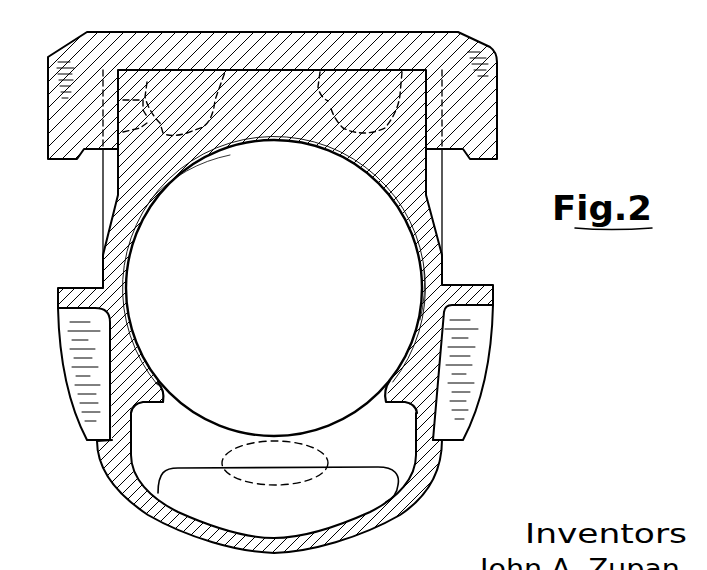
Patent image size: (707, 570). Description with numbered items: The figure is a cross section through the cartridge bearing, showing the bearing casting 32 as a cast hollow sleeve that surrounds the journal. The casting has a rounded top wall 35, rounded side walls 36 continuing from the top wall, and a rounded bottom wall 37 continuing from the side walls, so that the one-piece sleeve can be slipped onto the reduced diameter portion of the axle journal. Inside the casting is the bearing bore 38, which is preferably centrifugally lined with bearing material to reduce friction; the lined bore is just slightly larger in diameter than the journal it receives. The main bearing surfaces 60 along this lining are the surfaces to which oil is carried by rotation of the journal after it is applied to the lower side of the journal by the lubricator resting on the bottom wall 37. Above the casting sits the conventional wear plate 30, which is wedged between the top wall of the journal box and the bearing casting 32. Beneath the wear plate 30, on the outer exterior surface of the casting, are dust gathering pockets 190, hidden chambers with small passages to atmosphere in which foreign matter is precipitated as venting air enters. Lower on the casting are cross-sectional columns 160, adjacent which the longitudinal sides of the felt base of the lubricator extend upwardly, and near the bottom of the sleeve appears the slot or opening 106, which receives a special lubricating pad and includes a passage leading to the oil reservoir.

The wear plate 30 is at (403, 46).
The bearing casting 32 is at (415, 186).
The rounded top wall 35 is at (283, 124).
The rounded side walls 36 is at (127, 220).
The rounded bottom wall 37 is at (233, 537).
The bearing bore 38 is at (172, 263).
The main bearing surfaces 60 is at (163, 187).
The slot or opening 106 is at (323, 455).
The cross-sectional columns 160 is at (160, 389).
The dust gathering pockets 190 is at (213, 116).